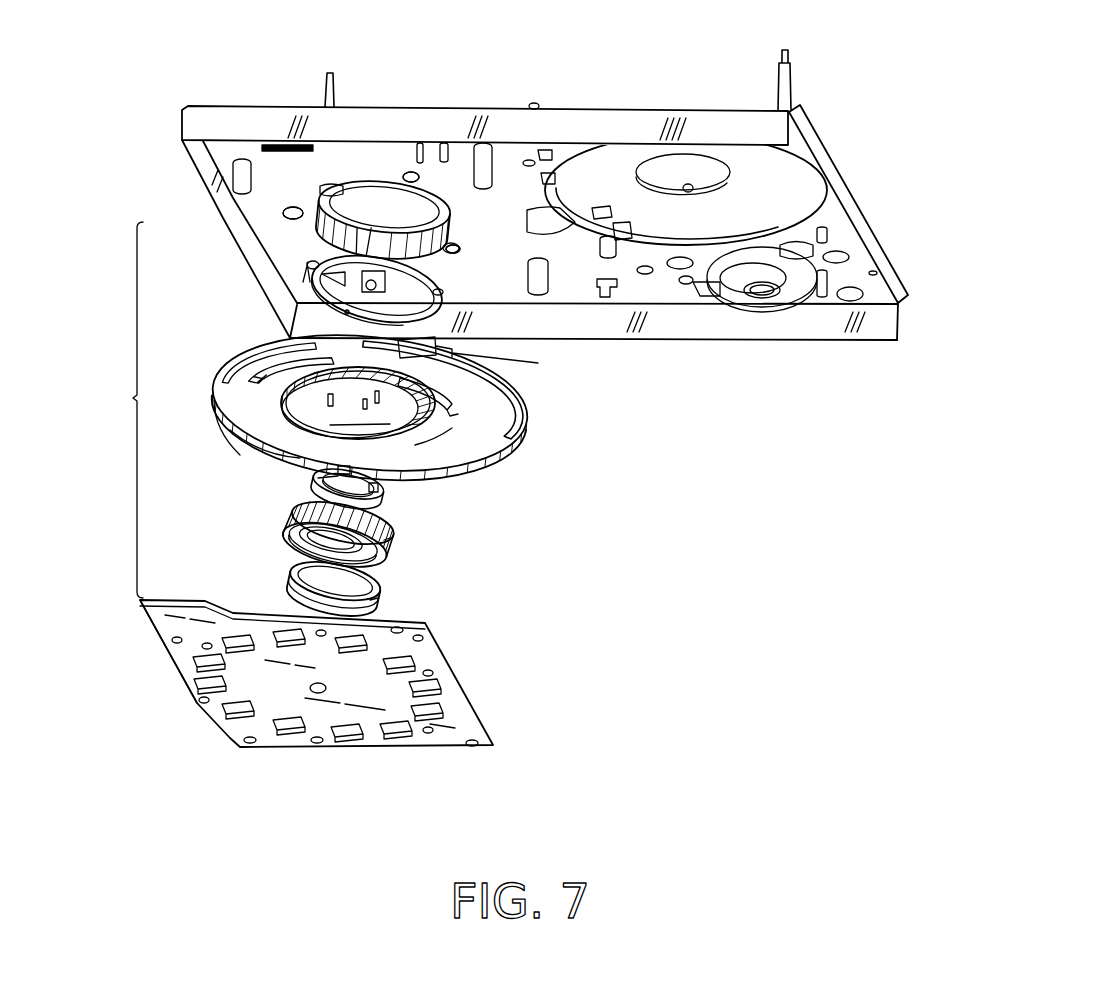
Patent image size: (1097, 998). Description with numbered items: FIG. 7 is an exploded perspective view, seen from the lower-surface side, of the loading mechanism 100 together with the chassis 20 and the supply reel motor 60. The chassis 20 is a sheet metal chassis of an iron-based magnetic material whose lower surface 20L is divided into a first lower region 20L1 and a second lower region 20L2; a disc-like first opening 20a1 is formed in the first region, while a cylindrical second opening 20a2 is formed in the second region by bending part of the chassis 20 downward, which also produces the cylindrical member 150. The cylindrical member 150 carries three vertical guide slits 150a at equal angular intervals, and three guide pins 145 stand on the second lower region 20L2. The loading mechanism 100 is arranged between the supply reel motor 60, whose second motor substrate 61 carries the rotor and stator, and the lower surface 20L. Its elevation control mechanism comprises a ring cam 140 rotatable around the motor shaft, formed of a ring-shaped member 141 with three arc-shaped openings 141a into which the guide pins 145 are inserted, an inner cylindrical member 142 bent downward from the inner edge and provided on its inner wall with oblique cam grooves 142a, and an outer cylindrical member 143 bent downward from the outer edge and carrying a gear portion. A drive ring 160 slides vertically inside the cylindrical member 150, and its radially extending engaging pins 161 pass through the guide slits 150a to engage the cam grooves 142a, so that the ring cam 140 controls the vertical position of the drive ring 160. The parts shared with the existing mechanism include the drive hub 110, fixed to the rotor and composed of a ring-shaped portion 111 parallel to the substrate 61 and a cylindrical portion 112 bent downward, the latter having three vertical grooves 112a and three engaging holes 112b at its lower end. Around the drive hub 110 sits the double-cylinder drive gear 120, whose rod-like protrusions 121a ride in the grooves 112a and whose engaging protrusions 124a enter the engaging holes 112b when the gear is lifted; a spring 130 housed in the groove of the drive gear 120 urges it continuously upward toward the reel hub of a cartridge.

The chassis 20 is at (250, 115).
The lower surface 20L is at (508, 155).
The first lower region 20L1 is at (860, 252).
The second lower region 20L2 is at (277, 163).
The first opening 20a1 is at (688, 172).
The second opening 20a2 is at (398, 215).
The cylindrical member 150 is at (365, 183).
The guide slits 150a is at (330, 188).
The guide pins 145 is at (283, 212).
The engaging pins 161 is at (345, 268).
The drive ring 160 is at (538, 363).
The loading mechanism 100 is at (117, 410).
The ring cam 140 is at (508, 445).
The ring-shaped member 141 is at (415, 430).
The arc-shaped openings 141a is at (262, 388).
The inner cylindrical member 142 is at (228, 390).
The cam grooves 142a is at (232, 433).
The outer cylindrical member 143 is at (214, 415).
The cylindrical portion 112 is at (315, 477).
The grooves 112a is at (302, 468).
The engaging holes 112b is at (322, 490).
The drive hub 110 is at (392, 500).
The ring-shaped portion 111 is at (395, 545).
The drive gear 120 is at (287, 525).
The rod-like protrusions 121a is at (290, 550).
The spring 130 is at (290, 590).
The engaging protrusions 124a is at (385, 592).
The supply reel motor 60 is at (440, 742).
The second motor substrate 61 is at (180, 664).